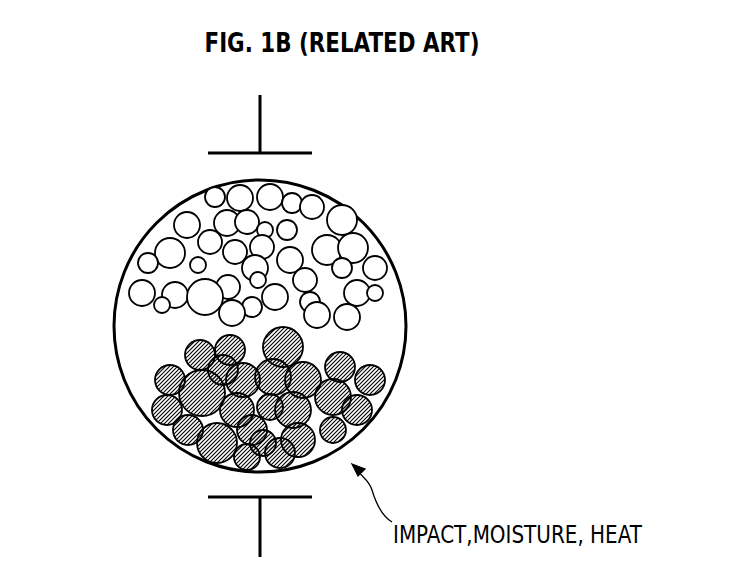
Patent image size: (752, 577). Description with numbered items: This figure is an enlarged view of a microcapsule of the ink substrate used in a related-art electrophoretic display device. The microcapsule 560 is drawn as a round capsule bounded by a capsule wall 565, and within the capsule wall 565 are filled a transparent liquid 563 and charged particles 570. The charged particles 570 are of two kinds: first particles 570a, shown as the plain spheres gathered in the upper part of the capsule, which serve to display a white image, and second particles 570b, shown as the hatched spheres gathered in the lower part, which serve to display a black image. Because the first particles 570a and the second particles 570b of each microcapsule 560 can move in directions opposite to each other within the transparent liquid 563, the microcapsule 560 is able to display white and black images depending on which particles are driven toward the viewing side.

The microcapsule 560 is at (290, 326).
The transparent liquid 563 is at (138, 330).
The capsule wall 565 is at (403, 308).
The charged particles 570 is at (333, 327).
The first particles 570a is at (350, 323).
The second particles 570b is at (383, 390).